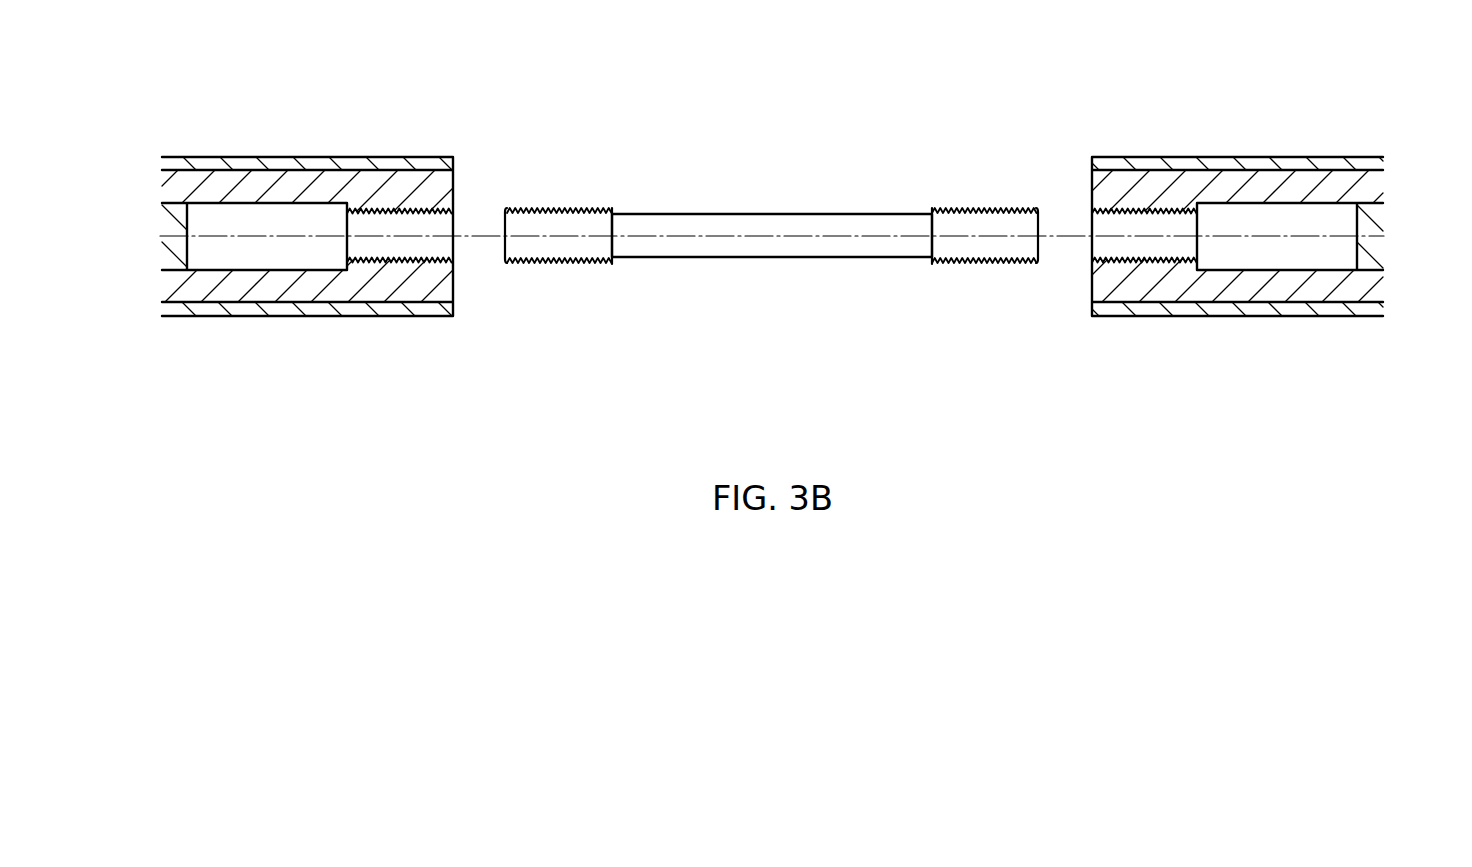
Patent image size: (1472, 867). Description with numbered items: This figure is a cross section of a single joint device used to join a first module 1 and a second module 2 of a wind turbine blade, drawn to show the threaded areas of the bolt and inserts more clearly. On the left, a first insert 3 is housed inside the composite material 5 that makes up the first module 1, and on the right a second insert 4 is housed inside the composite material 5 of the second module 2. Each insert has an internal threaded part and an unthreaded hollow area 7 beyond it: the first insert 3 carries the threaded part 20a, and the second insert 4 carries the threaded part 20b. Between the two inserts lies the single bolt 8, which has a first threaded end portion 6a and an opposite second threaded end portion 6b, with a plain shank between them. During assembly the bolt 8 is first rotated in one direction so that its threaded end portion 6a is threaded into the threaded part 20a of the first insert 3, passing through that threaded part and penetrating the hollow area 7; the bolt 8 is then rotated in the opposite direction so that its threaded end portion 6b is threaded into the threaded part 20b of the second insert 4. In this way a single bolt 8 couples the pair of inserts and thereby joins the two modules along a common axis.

The first module 1 is at (372, 157).
The second module 2 is at (1148, 157).
The first insert 3 is at (261, 187).
The second insert 4 is at (1273, 190).
The composite material 5 is at (173, 252).
The first threaded end portion 6a is at (560, 209).
The second threaded end portion 6b is at (978, 208).
The unthreaded hollow area 7 is at (266, 253).
The bolt 8 is at (771, 247).
The threaded part of first insert 20a is at (397, 261).
The threaded part of second insert 20b is at (1143, 263).